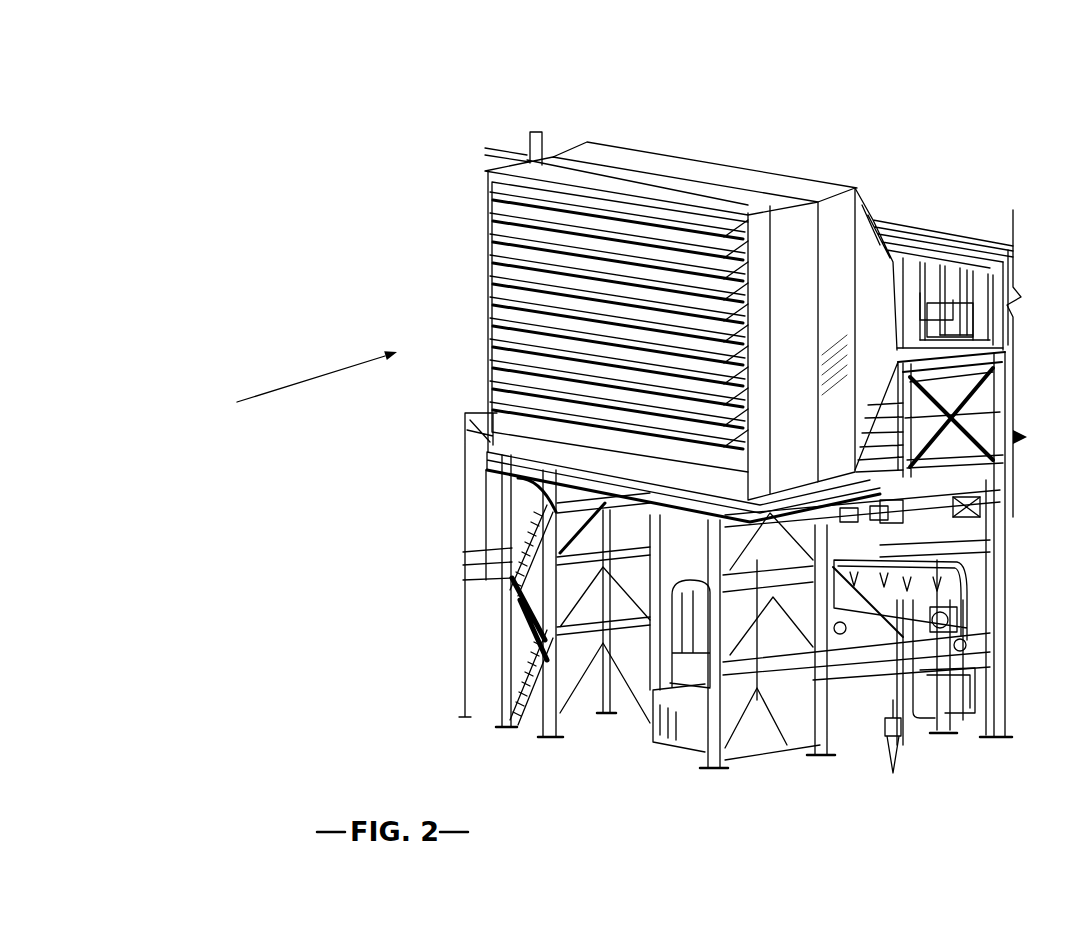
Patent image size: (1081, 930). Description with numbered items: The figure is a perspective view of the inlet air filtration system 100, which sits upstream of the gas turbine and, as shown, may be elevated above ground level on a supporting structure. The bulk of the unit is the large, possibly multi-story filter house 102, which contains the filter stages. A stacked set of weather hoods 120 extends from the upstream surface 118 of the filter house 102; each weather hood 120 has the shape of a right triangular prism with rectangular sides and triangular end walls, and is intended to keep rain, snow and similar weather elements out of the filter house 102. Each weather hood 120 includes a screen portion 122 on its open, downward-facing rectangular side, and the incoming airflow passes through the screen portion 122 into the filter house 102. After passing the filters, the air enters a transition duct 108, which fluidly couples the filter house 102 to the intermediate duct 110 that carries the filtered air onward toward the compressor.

The inlet air filtration unit 100 is at (284, 98).
The filter house 102 is at (767, 172).
The transition duct 108 is at (875, 250).
The intermediate duct 110 is at (942, 233).
The upstream surface 118 is at (548, 437).
The weather hoods 120 is at (508, 212).
The screen portion 122 is at (511, 258).